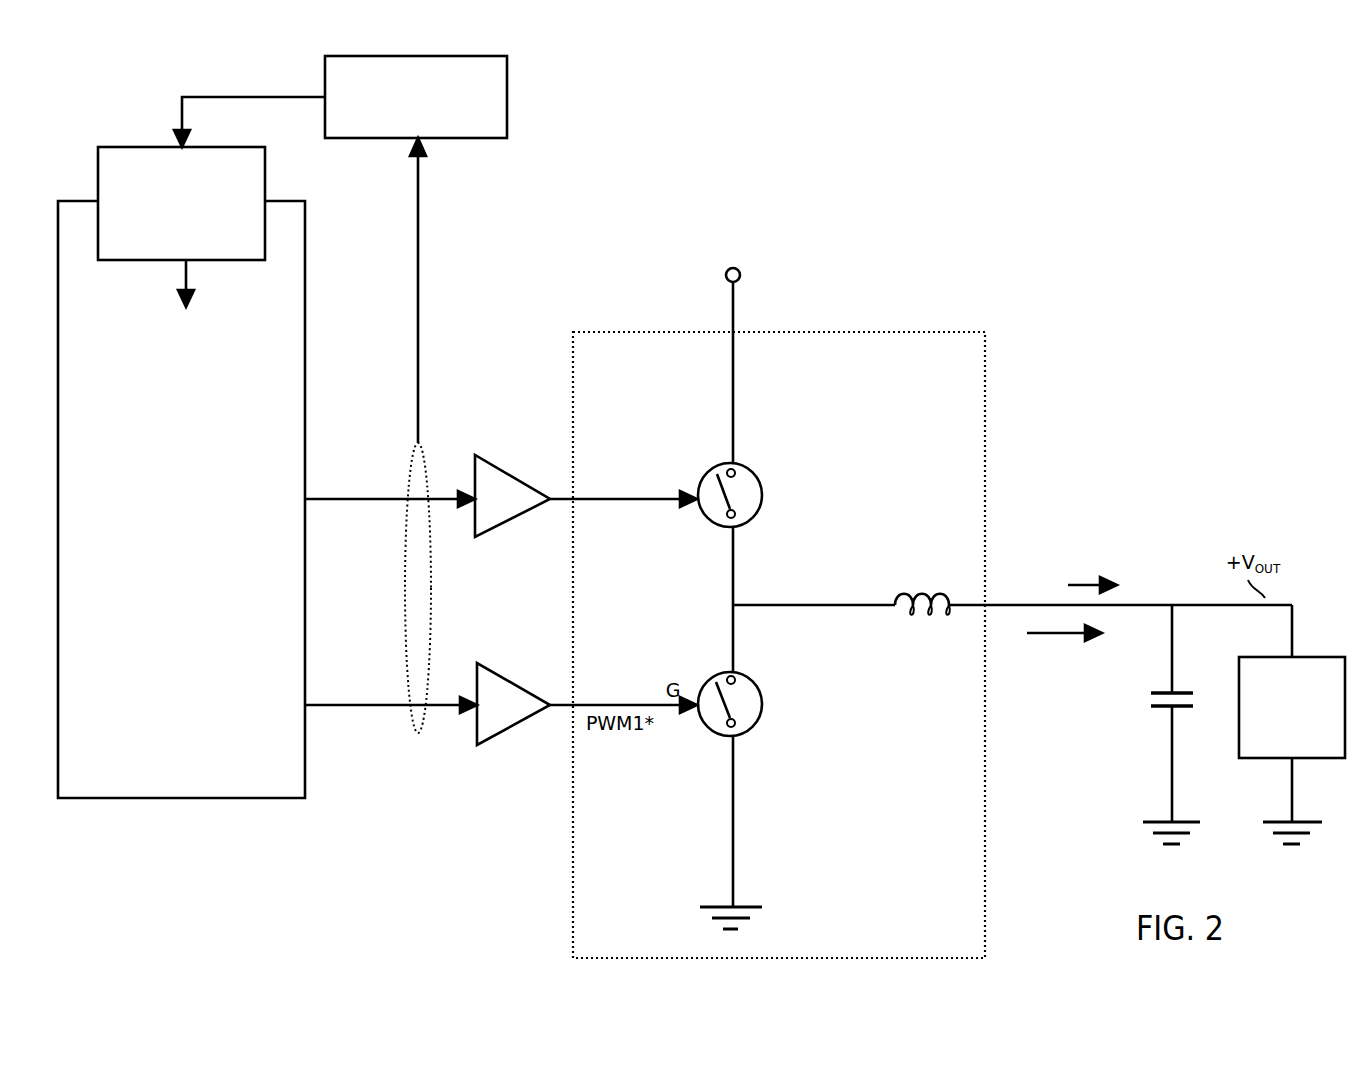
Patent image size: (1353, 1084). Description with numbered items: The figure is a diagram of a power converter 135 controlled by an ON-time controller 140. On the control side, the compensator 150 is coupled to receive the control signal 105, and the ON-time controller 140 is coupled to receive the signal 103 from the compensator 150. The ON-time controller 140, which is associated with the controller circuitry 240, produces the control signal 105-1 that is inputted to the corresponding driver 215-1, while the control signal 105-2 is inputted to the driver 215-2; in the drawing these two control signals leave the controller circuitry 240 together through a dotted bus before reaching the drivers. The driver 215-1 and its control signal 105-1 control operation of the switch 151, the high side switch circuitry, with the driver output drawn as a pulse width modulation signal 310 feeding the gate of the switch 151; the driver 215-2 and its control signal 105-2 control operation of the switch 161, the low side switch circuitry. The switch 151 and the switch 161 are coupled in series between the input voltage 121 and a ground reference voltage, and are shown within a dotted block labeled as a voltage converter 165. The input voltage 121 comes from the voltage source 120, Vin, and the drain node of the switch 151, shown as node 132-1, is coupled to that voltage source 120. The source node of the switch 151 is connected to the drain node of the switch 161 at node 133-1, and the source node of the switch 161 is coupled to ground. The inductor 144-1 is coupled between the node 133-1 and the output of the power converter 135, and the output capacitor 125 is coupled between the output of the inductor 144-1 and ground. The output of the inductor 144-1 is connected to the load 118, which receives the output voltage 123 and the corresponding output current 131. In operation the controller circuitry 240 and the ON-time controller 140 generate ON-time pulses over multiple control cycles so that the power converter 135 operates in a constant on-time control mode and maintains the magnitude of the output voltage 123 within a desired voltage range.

The signal 103 is at (235, 90).
The compensator 150 is at (402, 121).
The ON-time controller 140 is at (168, 239).
The controller circuitry 240 is at (168, 538).
The control signal 105 is at (195, 270).
The control signal 105-1 is at (338, 496).
The control signal 105-2 is at (363, 710).
The driver 215-1 is at (487, 535).
The driver 215-2 is at (497, 745).
The PWM1 signal 310 is at (612, 490).
The voltage source 120 is at (705, 263).
The input voltage 121 is at (737, 312).
The voltage converter (V.C.) 165 is at (899, 831).
The node 132-1 is at (737, 406).
The switch 151 is at (765, 497).
The node 133-1 is at (737, 580).
The switch 161 is at (765, 705).
The inductor 144-1 is at (922, 583).
The power converter 135 is at (1108, 421).
The output voltage 123 is at (1085, 575).
The output current 131 is at (1063, 638).
The output capacitor 125 is at (1145, 700).
The load 118 is at (1278, 731).